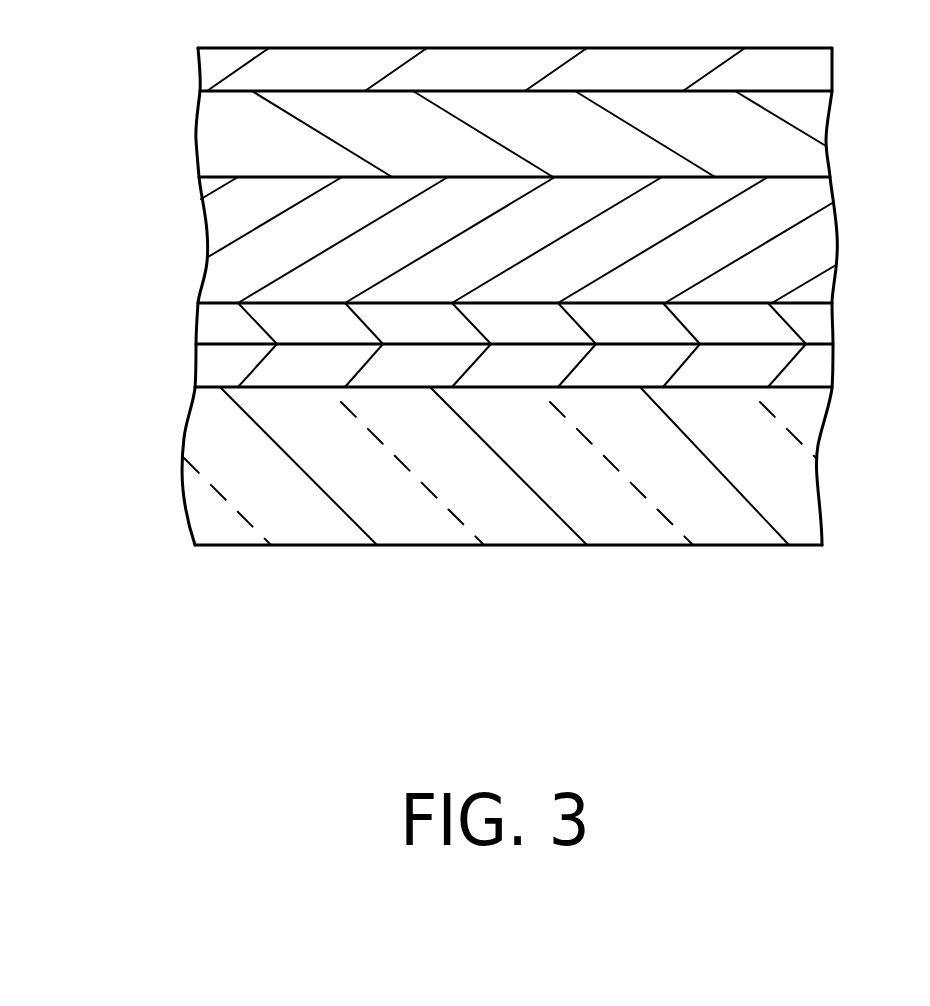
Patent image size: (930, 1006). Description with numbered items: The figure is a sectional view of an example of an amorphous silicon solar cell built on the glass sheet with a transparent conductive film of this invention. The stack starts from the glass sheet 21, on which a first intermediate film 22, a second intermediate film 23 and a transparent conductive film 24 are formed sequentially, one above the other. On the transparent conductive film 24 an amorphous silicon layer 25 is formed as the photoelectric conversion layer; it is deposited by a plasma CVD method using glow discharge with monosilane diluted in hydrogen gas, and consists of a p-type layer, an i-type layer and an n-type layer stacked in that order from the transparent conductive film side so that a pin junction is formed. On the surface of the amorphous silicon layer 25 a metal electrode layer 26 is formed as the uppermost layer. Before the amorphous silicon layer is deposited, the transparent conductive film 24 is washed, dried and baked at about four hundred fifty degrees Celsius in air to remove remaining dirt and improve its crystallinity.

The glass sheet 21 is at (198, 488).
The first intermediate film 22 is at (215, 370).
The second intermediate film 23 is at (217, 323).
The transparent conductive film 24 is at (220, 227).
The amorphous silicon layer 25 is at (213, 139).
The metal electrode layer 26 is at (206, 69).